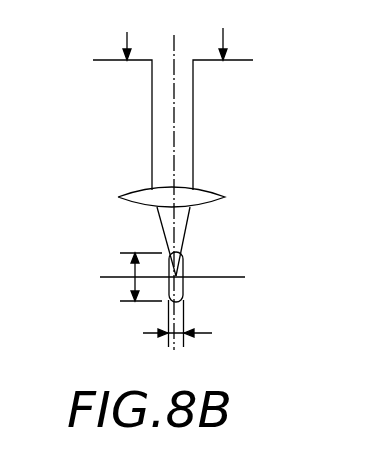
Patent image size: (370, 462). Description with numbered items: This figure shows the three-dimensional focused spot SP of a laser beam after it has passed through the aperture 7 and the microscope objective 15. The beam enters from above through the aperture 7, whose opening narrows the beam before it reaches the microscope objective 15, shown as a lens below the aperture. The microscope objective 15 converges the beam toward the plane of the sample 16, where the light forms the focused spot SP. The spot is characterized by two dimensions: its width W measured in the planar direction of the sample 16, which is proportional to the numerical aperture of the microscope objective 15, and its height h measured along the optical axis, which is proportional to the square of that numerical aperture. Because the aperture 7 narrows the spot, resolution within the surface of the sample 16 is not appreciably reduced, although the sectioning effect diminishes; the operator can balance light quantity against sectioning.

The aperture 7 is at (237, 61).
The microscope objective 15 is at (213, 192).
The sample 16 is at (238, 276).
The focused spot SP is at (184, 289).
The height of the focused spot h is at (134, 279).
The width of the focused spot W is at (172, 338).